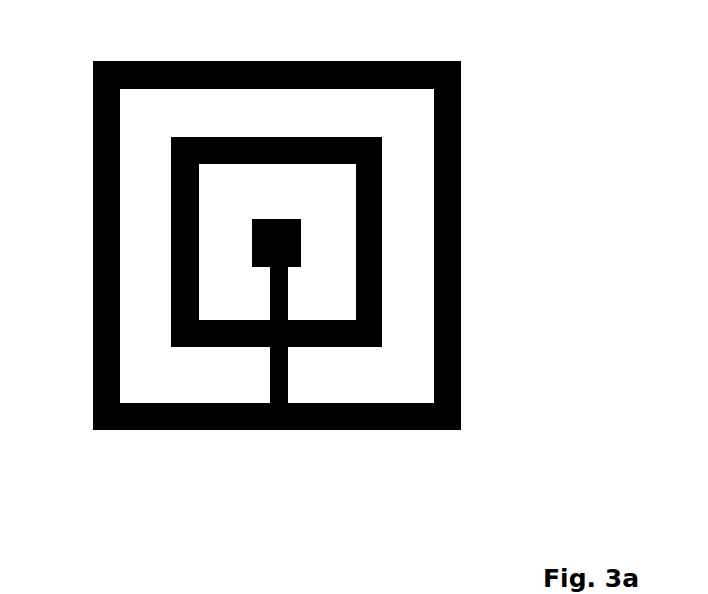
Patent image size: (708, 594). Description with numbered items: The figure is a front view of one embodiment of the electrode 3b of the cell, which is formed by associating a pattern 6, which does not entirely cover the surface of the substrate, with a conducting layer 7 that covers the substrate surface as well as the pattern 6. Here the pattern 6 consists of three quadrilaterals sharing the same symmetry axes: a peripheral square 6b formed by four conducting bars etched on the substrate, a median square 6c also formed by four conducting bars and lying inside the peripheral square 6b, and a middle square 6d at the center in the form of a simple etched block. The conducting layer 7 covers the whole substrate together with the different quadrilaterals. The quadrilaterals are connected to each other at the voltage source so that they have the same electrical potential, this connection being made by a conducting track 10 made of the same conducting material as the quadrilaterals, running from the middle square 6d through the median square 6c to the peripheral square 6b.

The electrode 3b is at (546, 263).
The pattern 6 is at (331, 431).
The peripheral square 6b is at (462, 101).
The median square 6c is at (245, 136).
The middle square 6d is at (283, 217).
The conducting layer 7 is at (139, 302).
The conducting track 10 is at (268, 373).